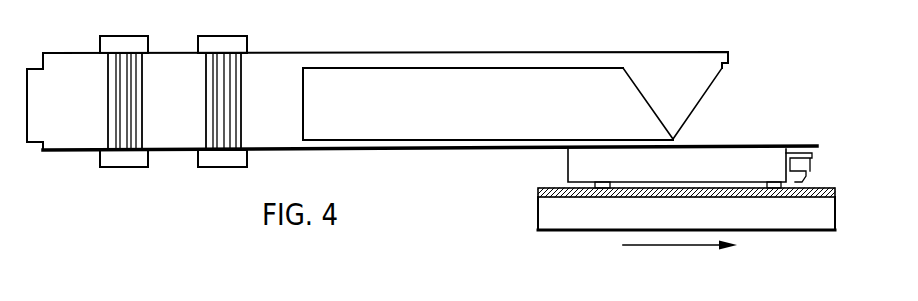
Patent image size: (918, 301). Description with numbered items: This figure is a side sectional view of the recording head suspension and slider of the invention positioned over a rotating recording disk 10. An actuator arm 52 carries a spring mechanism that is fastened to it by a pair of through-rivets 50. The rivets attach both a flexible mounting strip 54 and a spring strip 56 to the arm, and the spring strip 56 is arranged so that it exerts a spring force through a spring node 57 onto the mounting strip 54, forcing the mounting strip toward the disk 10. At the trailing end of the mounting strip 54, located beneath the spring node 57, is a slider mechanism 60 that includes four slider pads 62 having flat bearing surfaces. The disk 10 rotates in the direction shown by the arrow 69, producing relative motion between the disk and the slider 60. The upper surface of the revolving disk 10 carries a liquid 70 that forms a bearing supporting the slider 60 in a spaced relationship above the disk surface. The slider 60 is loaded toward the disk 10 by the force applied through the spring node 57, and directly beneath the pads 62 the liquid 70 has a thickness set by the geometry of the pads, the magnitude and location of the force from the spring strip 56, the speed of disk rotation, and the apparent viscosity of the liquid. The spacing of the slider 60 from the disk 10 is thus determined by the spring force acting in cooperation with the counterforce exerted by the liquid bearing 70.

The disk 10 is at (538, 220).
The through-rivets 50 is at (210, 36).
The actuator arm 52 is at (70, 53).
The flexible mounting strip 54 is at (412, 152).
The spring strip 56 is at (428, 52).
The spring node 57 is at (676, 138).
The slider mechanism 60 is at (567, 158).
The slider pads 62 is at (602, 185).
The arrow 69 is at (652, 247).
The liquid 70 is at (823, 188).